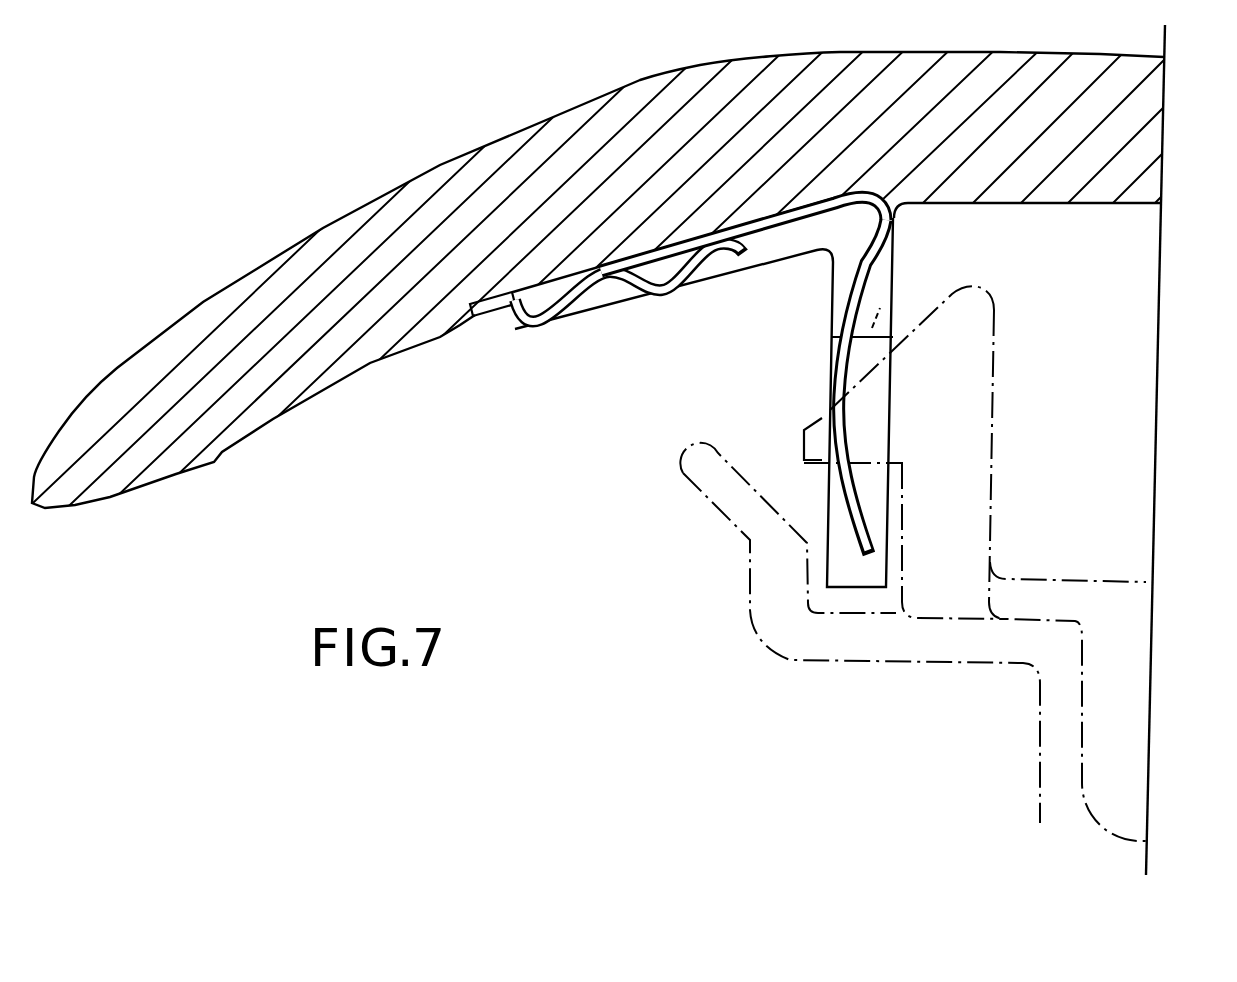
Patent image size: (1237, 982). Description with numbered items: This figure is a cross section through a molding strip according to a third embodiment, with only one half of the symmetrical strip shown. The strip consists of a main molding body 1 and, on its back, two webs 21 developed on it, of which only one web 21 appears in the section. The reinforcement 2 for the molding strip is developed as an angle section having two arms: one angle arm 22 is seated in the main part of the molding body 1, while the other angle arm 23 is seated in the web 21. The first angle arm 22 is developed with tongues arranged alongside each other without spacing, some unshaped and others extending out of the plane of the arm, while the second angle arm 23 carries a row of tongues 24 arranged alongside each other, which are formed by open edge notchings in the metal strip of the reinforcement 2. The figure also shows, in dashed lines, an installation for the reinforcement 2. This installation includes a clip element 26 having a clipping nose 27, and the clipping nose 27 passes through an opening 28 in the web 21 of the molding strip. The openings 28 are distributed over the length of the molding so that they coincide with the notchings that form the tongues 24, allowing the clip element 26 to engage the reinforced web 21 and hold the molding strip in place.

The molding body 1 is at (1140, 146).
The reinforcement 2 is at (783, 222).
The web 21 is at (858, 584).
The angle arm 22 is at (650, 243).
The angle arm 23 is at (856, 433).
The tongues 24 is at (852, 530).
The clip element 26 is at (965, 500).
The clipping nose 27 is at (822, 418).
The opening 28 is at (903, 281).